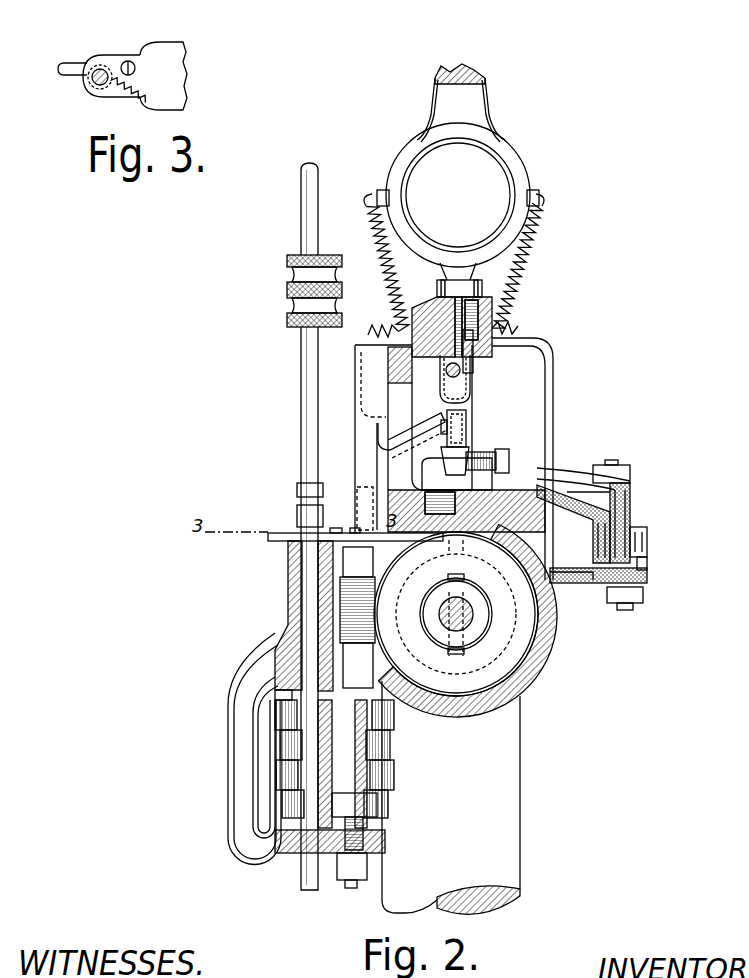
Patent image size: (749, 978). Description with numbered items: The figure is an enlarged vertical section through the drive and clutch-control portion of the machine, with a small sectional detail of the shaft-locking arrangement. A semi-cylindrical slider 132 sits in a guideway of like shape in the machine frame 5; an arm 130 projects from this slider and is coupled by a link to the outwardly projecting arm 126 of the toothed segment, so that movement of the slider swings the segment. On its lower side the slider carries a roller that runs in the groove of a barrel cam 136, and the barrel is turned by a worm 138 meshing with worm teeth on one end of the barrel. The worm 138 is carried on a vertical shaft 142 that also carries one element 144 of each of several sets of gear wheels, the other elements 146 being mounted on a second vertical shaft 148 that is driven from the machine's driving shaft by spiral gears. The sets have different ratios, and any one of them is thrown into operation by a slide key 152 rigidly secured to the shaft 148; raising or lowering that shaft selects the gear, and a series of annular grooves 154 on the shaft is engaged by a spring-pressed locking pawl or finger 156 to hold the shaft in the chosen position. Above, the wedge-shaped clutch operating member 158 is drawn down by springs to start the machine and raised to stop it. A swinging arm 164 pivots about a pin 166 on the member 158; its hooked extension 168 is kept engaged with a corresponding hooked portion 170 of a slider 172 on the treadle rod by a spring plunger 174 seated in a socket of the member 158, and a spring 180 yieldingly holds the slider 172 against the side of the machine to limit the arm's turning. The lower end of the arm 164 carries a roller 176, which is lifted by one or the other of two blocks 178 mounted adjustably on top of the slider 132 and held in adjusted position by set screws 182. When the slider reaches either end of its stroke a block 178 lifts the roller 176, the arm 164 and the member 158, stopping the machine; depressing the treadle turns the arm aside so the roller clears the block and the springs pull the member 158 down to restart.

In FIG. 2, the machine frame 5 is at (490, 812).
In FIG. 2, the outwardly projecting arm 126 is at (578, 583).
In FIG. 2, the arm 130 is at (630, 493).
In FIG. 2, the semi-cylindrical slider 132 is at (530, 520).
In FIG. 2, the barrel cam 136 is at (490, 647).
In FIG. 2, the worm 138 is at (345, 605).
In FIG. 2, the vertical shaft 142 is at (353, 790).
In FIG. 2, the gear wheel element 144 is at (387, 790).
In FIG. 2, the gear wheel element 146 is at (285, 780).
In FIG. 3, the vertical shaft 148 is at (88, 87).
In FIG. 2, the vertical shaft 148 is at (300, 880).
In FIG. 2, the slide key 152 is at (300, 680).
In FIG. 2, the annular grooves 154 is at (297, 490).
In FIG. 3, the locking pawl or finger 156 is at (110, 62).
In FIG. 2, the locking pawl or finger 156 is at (280, 537).
In FIG. 2, the clutch operating member 158 is at (500, 335).
In FIG. 2, the swinging arm 164 is at (321, 411).
In FIG. 2, the pin 166 is at (548, 368).
In FIG. 2, the hooked extension 168 is at (346, 417).
In FIG. 2, the hooked portion 170 is at (338, 381).
In FIG. 2, the slider 172 is at (342, 446).
In FIG. 2, the spring plunger 174 is at (475, 366).
In FIG. 2, the roller 176 is at (478, 442).
In FIG. 2, the blocks 178 is at (334, 436).
In FIG. 2, the spring 180 is at (385, 330).
In FIG. 2, the set screws 182 is at (509, 455).